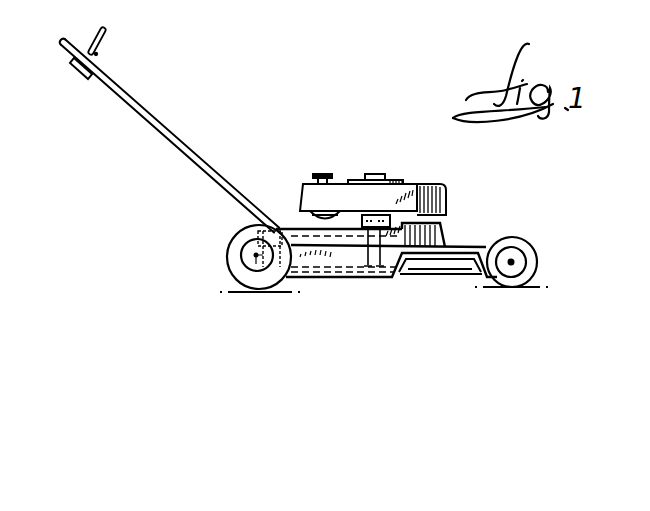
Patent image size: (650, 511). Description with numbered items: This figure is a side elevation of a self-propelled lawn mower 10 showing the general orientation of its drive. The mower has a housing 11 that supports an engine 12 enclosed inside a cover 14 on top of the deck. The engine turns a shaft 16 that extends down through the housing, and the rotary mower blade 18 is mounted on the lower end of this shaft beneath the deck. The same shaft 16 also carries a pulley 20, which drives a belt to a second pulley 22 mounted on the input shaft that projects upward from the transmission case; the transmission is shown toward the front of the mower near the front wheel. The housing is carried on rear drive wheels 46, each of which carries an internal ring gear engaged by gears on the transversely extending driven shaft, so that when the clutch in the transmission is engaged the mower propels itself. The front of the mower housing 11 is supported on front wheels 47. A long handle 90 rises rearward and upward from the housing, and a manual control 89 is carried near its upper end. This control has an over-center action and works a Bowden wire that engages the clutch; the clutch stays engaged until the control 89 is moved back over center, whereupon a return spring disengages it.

The lawn mower 10 is at (313, 158).
The housing 11 is at (469, 243).
The engine 12 is at (398, 174).
The cover 14 is at (416, 184).
The shaft 16 is at (358, 255).
The rotary mower blade 18 is at (455, 264).
The pulley 20 is at (362, 246).
The pulley 22 is at (280, 224).
The rear drive wheels 46 is at (232, 240).
The front wheels 47 is at (524, 240).
The manual control 89 is at (99, 54).
The handle 90 is at (124, 97).